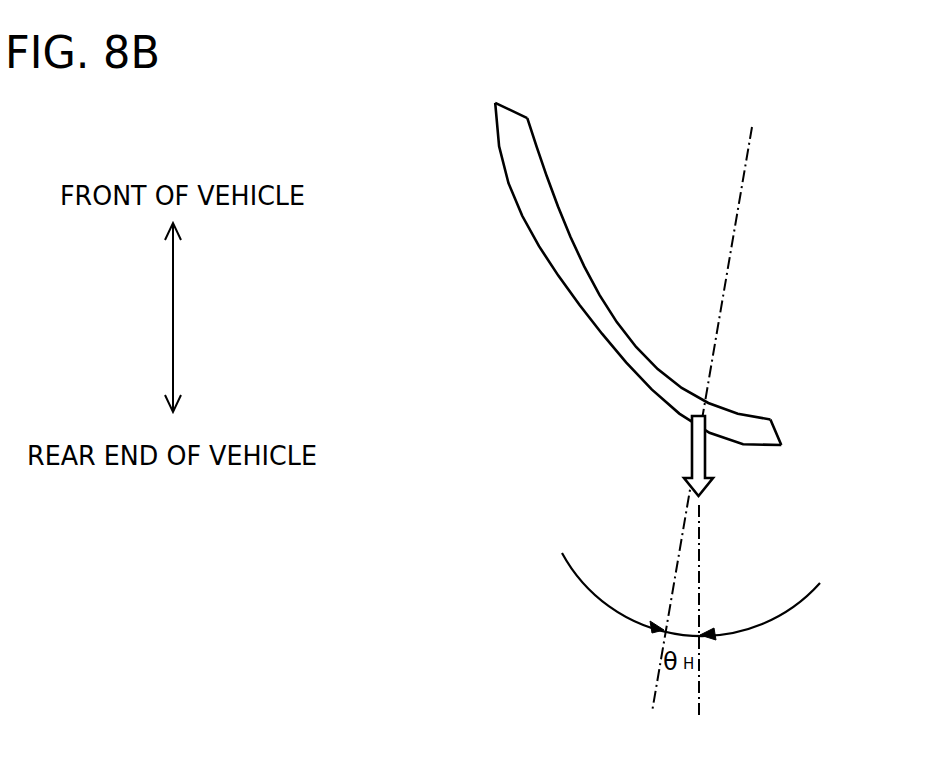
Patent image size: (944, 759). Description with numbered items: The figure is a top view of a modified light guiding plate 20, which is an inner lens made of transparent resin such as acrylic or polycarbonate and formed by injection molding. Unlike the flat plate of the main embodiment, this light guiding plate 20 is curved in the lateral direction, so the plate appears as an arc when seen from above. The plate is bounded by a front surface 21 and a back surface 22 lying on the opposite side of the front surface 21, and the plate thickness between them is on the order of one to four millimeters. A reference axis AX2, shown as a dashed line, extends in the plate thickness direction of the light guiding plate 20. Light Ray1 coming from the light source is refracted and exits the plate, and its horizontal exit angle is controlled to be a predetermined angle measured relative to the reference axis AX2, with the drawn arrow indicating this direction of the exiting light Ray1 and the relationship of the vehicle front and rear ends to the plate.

The light guiding plate 20 is at (636, 246).
The front surface 21 is at (570, 303).
The back surface 22 is at (613, 307).
The light Ray1 is at (697, 447).
The reference axis AX2 is at (656, 678).